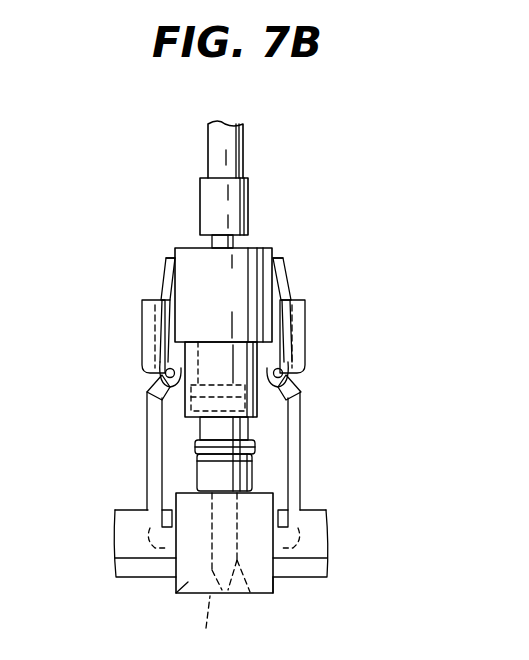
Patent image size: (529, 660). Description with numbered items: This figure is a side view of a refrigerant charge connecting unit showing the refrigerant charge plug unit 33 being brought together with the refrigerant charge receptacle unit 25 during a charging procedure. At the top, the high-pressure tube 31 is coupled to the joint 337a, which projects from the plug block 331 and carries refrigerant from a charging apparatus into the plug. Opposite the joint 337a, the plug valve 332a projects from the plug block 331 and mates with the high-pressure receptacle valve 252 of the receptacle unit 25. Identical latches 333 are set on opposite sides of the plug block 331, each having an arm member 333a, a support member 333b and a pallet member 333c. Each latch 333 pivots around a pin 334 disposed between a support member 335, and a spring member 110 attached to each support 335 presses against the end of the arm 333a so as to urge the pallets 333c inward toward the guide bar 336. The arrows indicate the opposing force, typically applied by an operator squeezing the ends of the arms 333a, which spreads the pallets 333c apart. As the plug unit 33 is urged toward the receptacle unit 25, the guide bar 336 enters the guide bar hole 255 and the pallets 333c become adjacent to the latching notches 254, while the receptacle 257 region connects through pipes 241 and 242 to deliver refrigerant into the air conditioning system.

The high-pressure tube 31 is at (241, 140).
The joint 337a is at (246, 193).
The refrigerant charge plug unit 33 is at (268, 222).
The plug block 331 is at (240, 297).
The latch 333 is at (166, 268).
The spring member 110 is at (171, 257).
The support member 335 is at (147, 308).
The pin 334 is at (165, 375).
The support member 333b is at (160, 385).
The arm member 333a is at (150, 447).
The plug valve 332a is at (258, 407).
The high-pressure receptacle valve 252 is at (202, 475).
The pallet member 333c is at (170, 522).
The pipe 241 is at (322, 550).
The pipe 242 is at (322, 514).
The latching notch 254 is at (152, 574).
The base lower corner 257 is at (186, 583).
The guide bar hole 255 is at (249, 594).
The guide bar 336 is at (206, 627).
The refrigerant charge receptacle unit 25 is at (288, 605).